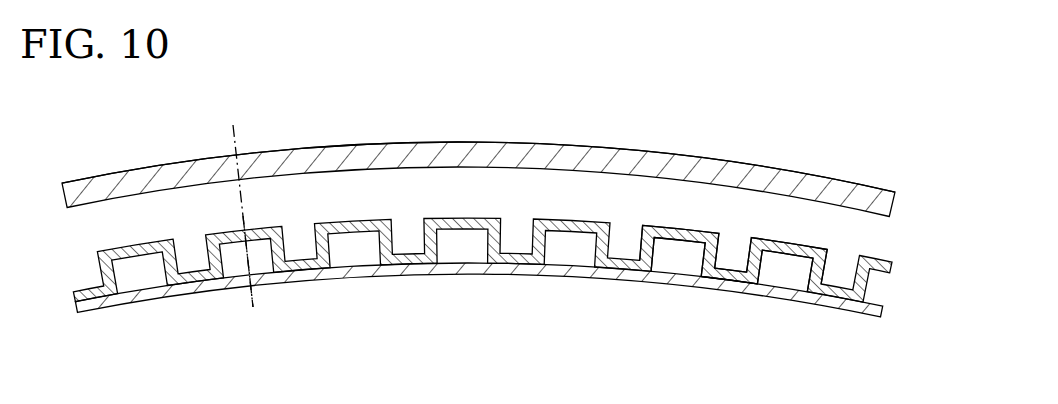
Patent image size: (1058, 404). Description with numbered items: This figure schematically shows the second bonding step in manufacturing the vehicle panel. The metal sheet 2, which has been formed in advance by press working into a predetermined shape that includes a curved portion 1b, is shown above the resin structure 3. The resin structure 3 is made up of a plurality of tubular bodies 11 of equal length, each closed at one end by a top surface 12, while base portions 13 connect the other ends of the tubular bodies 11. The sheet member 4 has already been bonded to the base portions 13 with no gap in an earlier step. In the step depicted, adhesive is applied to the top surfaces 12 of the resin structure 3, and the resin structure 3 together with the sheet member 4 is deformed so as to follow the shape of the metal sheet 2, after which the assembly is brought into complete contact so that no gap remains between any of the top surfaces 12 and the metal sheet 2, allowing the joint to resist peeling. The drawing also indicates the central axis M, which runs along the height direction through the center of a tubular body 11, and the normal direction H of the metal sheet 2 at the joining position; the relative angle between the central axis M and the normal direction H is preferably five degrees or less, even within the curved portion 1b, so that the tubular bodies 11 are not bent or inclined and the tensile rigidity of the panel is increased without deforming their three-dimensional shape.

The curved portion 1b is at (479, 130).
The metal sheet 2 is at (813, 171).
The resin structure 3 is at (888, 270).
The sheet member 4 is at (866, 318).
The tubular body 11 is at (641, 250).
The top surface 12 is at (773, 240).
The base portion 13 is at (720, 278).
The normal direction H is at (238, 134).
The central axis M is at (255, 304).